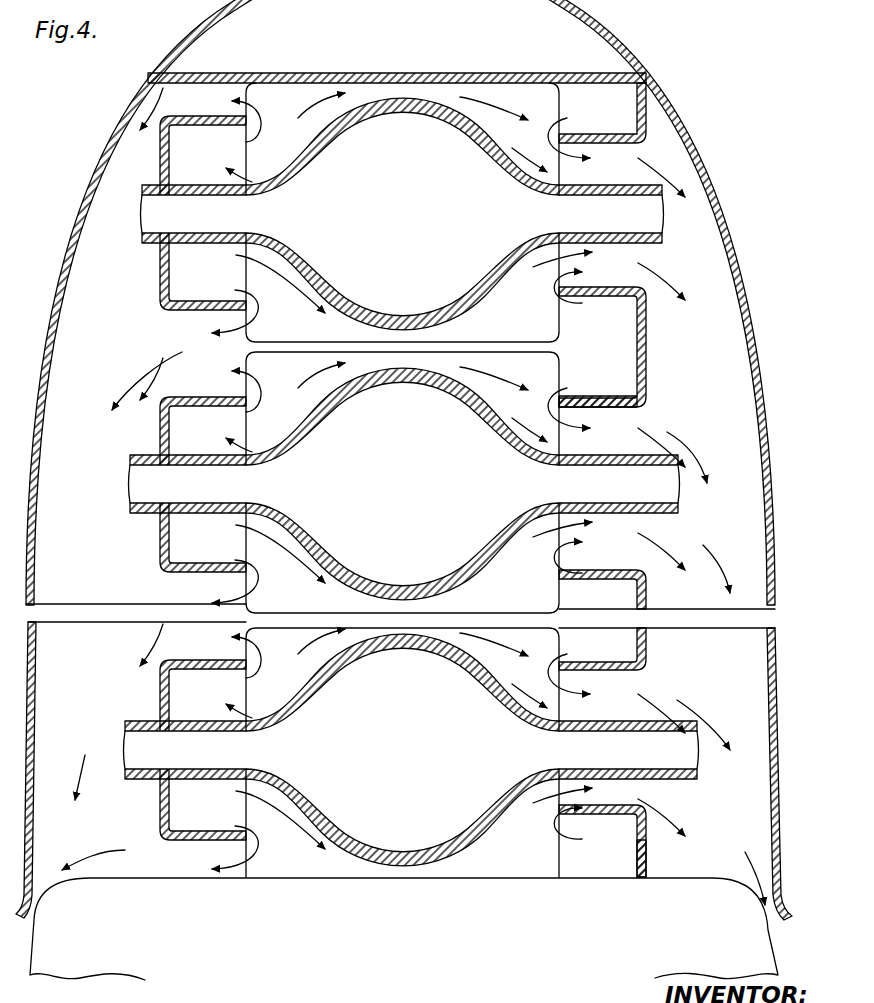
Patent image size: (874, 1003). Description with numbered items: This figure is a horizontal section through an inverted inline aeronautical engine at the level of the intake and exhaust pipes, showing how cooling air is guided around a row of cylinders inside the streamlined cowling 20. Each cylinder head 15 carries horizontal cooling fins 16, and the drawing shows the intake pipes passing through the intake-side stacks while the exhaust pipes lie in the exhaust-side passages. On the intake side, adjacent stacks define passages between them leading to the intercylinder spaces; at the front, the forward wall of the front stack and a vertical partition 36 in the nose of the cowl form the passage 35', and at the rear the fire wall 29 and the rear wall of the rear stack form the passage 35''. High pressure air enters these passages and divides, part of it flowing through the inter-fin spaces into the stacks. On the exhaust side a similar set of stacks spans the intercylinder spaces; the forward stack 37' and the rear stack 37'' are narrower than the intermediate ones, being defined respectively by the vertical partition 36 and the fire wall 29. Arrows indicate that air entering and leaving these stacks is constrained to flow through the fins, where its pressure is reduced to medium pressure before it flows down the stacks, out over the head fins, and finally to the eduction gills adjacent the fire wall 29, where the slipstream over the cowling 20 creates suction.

The cylinder head 15 is at (447, 80).
The cooling fins 16 is at (540, 92).
The cowling 20 is at (737, 298).
The fire wall 29 is at (178, 880).
The passage 35' is at (221, 64).
The passage 35'' is at (230, 897).
The vertical partition 36 is at (275, 80).
The forward stack 37' is at (641, 105).
The rear stack 37'' is at (664, 861).